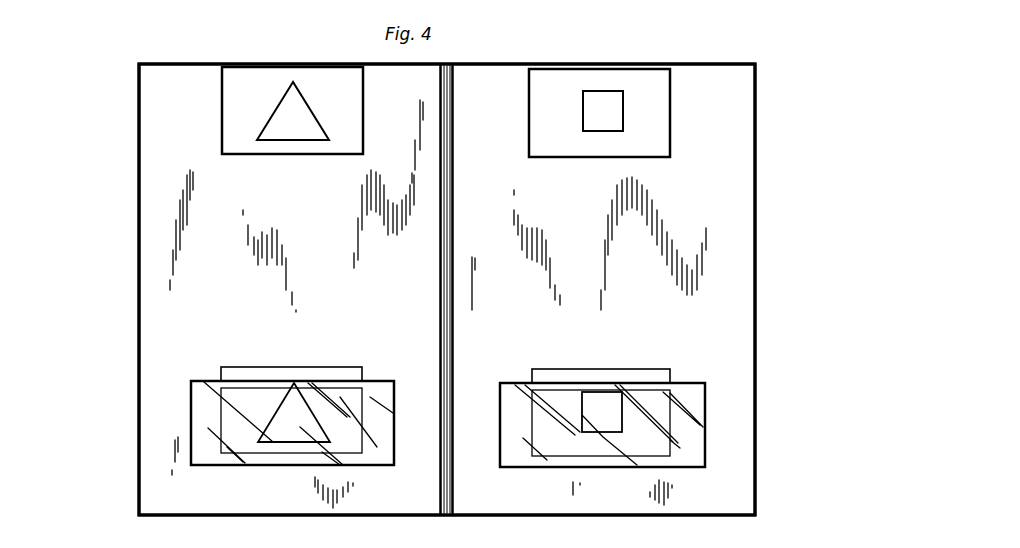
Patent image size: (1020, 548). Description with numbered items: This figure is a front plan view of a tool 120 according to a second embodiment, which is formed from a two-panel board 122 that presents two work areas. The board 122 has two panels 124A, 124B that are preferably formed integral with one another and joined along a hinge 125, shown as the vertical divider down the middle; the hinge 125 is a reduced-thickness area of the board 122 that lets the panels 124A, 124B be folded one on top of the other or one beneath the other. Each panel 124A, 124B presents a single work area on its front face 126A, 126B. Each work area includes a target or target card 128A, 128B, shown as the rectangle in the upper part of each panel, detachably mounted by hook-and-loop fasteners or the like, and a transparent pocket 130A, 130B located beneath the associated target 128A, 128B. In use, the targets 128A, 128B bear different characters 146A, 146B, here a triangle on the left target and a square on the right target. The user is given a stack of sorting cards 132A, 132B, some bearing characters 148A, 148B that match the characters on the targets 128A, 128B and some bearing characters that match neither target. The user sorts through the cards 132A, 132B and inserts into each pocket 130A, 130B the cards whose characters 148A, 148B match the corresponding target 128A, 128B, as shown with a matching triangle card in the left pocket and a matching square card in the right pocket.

The tool 120 is at (122, 88).
The two-panel board 122 is at (770, 108).
The first panel 124A is at (150, 280).
The second panel 124B is at (740, 258).
The hinge 125 is at (447, 116).
The front face of first panel 126A is at (150, 494).
The front face of second panel 126B is at (745, 487).
The target card 128A is at (232, 128).
The target card 128B is at (663, 150).
The transparent pocket 130A is at (200, 401).
The transparent pocket 130B is at (705, 405).
The sorting card 132A is at (240, 372).
The sorting card 132B is at (665, 372).
The character 146A is at (293, 82).
The character 146B is at (608, 97).
The character 148A is at (297, 385).
The character 148B is at (598, 392).